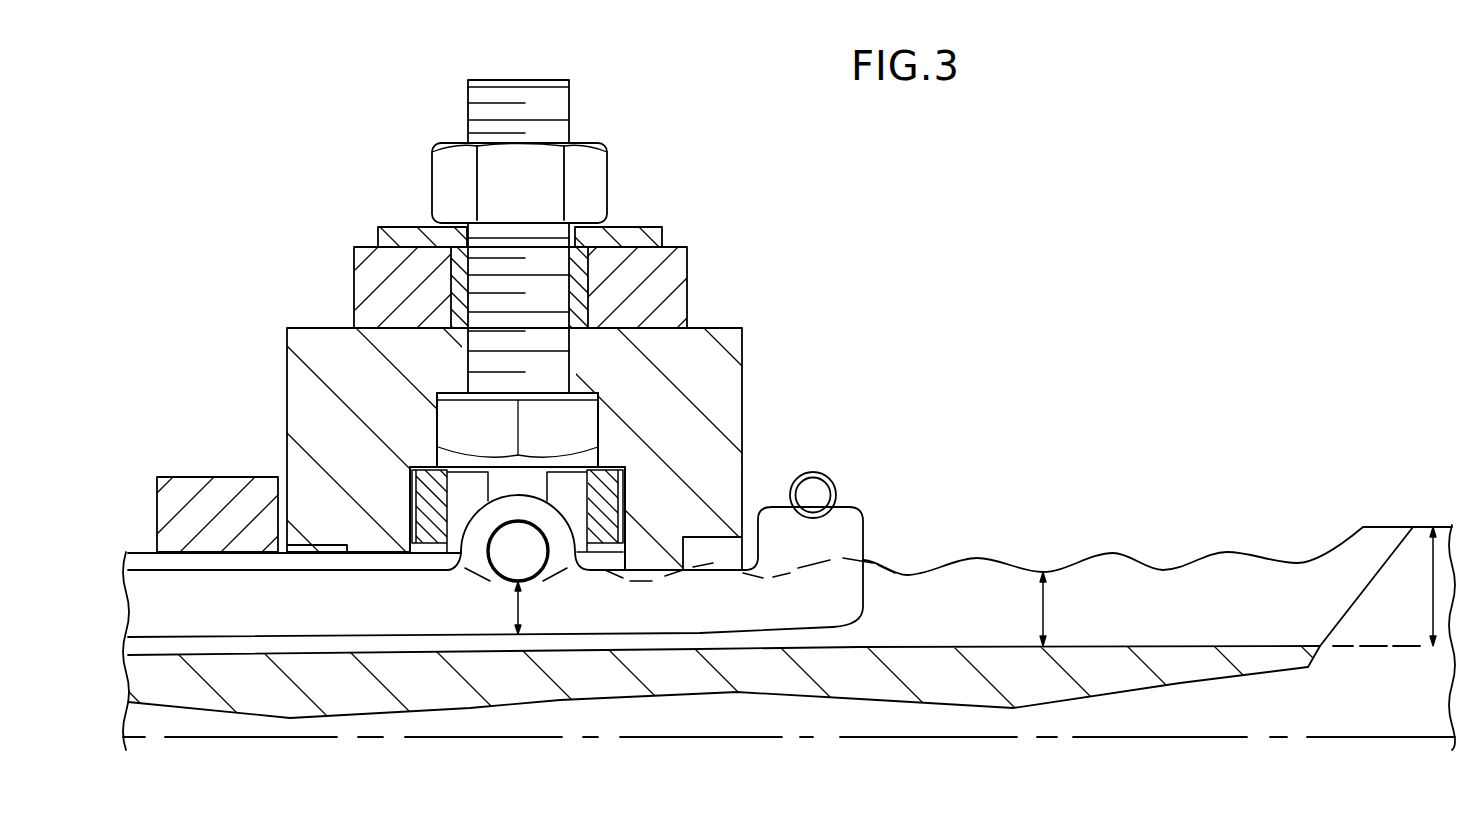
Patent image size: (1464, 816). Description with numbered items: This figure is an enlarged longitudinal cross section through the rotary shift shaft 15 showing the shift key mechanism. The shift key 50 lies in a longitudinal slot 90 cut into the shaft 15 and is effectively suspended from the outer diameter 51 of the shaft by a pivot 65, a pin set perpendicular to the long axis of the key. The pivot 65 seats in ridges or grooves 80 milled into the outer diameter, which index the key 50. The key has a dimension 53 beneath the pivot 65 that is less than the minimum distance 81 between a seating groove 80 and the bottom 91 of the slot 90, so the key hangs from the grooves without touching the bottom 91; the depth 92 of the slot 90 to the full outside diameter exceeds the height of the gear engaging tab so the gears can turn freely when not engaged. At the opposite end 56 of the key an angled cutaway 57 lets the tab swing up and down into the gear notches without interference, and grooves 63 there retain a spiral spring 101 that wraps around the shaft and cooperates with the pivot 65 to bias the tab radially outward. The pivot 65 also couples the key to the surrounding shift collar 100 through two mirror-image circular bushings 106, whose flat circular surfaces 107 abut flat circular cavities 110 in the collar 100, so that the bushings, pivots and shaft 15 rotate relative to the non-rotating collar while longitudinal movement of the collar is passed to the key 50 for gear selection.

The shift shaft 15 is at (1385, 693).
The shift key 50 is at (397, 613).
The outer diameter 51 is at (1297, 562).
The dimension 53 is at (520, 613).
The opposite end 56 is at (837, 614).
The angled cutaway 57 is at (723, 632).
The grooves 63 is at (818, 517).
The pivot 65 is at (531, 558).
The seating grooves 80 is at (1047, 568).
The minimum distance 81 is at (1043, 604).
The longitudinal slot 90 is at (1293, 613).
The bottom 91 is at (1150, 646).
The depth 92 is at (1433, 585).
The shift collar 100 is at (735, 343).
The spring 101 is at (814, 494).
The circular bushings 106 is at (600, 488).
The flat circular surfaces 107 is at (410, 467).
The flat circular cavities 110 is at (412, 508).